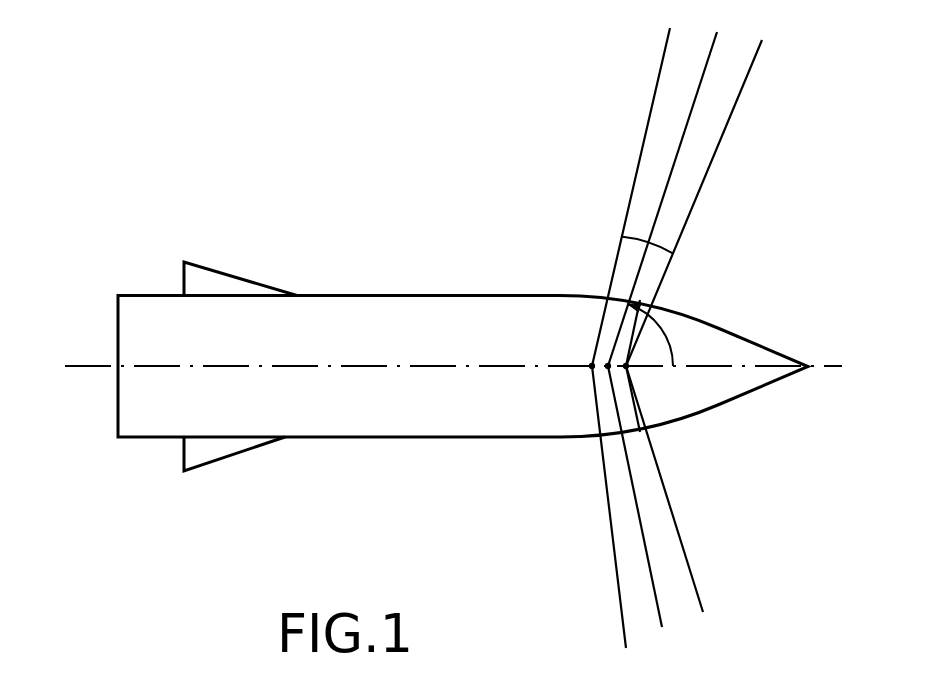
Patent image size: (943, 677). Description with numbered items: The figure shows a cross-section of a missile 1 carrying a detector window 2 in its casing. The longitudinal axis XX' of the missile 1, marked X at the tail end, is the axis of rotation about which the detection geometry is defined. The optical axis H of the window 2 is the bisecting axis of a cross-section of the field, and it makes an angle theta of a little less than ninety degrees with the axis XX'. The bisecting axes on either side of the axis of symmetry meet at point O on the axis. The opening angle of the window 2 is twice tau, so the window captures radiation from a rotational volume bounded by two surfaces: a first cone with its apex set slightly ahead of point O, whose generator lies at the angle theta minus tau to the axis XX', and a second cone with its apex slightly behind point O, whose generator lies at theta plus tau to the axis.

The missile 1 is at (435, 317).
The detector window 2 is at (648, 300).
The optical axis of the window H is at (667, 199).
The point O is at (618, 384).
The longitudinal axis XX' X is at (457, 386).